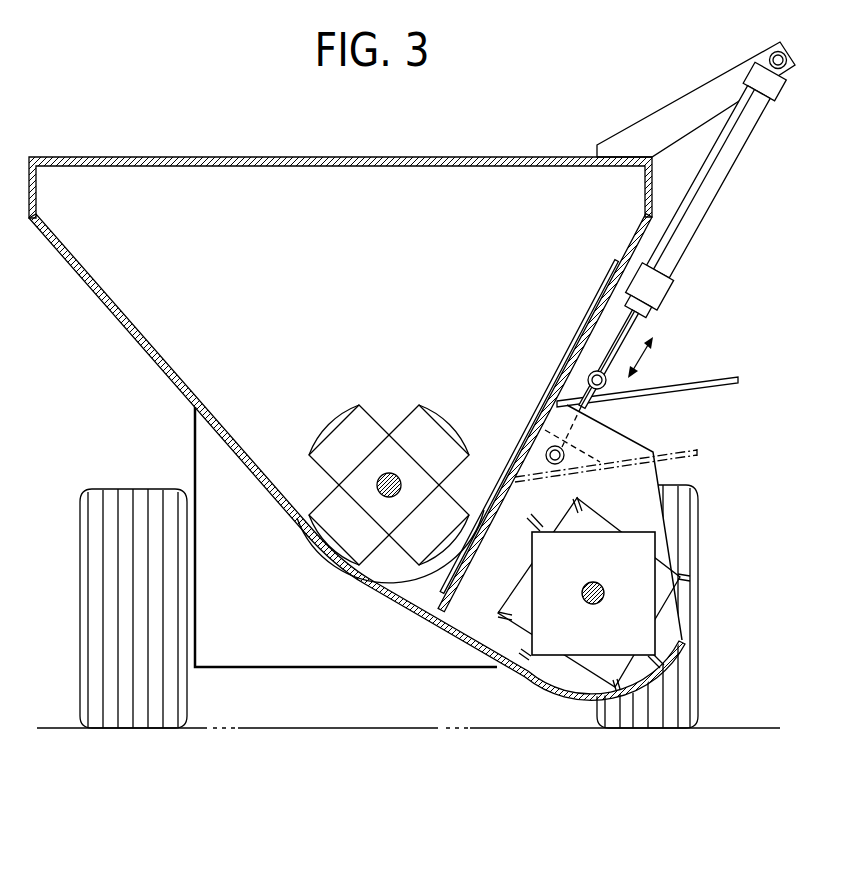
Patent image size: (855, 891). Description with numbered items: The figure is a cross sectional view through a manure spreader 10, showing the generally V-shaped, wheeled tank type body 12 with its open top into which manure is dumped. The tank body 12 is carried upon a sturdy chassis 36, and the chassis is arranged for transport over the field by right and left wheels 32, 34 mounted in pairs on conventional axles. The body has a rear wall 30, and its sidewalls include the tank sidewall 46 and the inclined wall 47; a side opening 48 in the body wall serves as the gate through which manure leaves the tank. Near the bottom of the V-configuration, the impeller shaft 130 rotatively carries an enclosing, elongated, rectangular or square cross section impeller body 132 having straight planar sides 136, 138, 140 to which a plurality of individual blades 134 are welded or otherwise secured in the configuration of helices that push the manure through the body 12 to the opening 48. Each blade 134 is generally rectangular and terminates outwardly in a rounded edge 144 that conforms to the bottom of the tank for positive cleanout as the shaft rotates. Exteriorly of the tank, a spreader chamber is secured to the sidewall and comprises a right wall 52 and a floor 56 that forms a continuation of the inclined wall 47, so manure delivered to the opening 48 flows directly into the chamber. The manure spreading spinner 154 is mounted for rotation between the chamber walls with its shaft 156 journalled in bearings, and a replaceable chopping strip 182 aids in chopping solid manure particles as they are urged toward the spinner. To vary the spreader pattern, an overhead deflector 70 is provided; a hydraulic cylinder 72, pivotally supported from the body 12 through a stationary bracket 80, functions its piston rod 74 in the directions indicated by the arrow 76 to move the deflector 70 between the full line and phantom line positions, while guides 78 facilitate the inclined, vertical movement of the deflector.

The manure spreader 10 is at (457, 150).
The tank type body 12 is at (112, 320).
The rear wall 30 is at (357, 428).
The right wheel 32 is at (700, 545).
The left wheel 34 is at (80, 540).
The chassis 36 is at (262, 653).
The tank sidewall 46 is at (628, 240).
The inclined wall 47 is at (83, 285).
The side opening 48 is at (505, 458).
The right wall 52 is at (637, 508).
The floor 56 is at (472, 630).
The overhead deflector 70 is at (730, 376).
The hydraulic cylinder 72 is at (697, 243).
The piston rod 74 is at (640, 321).
The arrow 76 is at (653, 368).
The guides 78 is at (545, 413).
The stationary bracket 80 is at (672, 113).
The impeller shaft 130 is at (371, 494).
The impeller body 132 is at (391, 430).
The blades 134 is at (312, 450).
The side 136 is at (353, 567).
The side 138 is at (358, 455).
The side 140 is at (438, 407).
The rounded edge 144 is at (333, 435).
The spinner 154 is at (555, 666).
The spinner shaft 156 is at (594, 605).
The chopping strip 182 is at (540, 532).